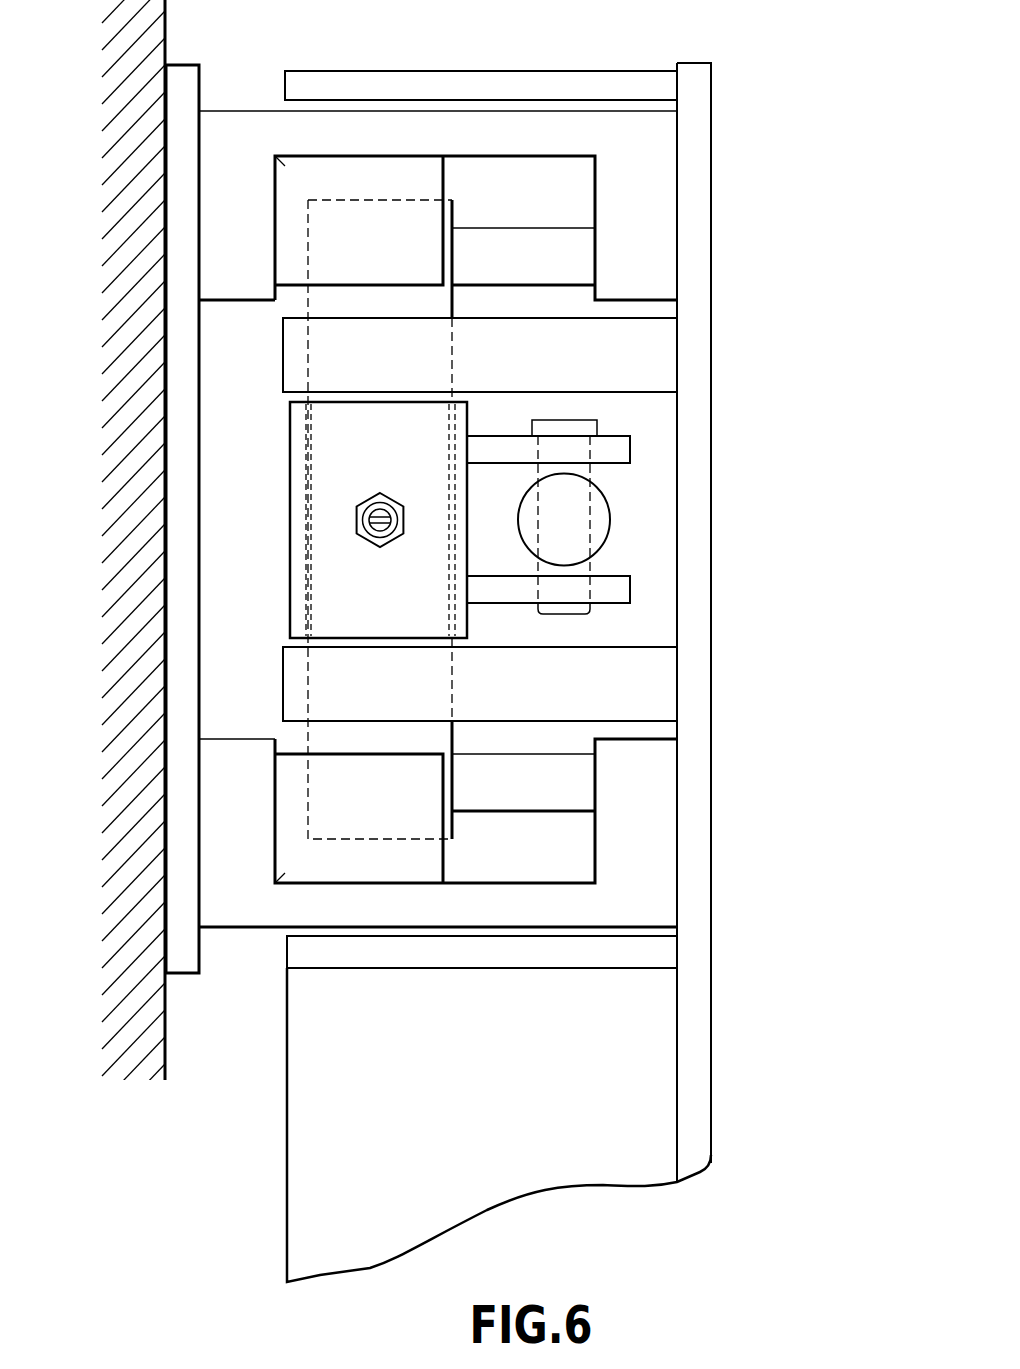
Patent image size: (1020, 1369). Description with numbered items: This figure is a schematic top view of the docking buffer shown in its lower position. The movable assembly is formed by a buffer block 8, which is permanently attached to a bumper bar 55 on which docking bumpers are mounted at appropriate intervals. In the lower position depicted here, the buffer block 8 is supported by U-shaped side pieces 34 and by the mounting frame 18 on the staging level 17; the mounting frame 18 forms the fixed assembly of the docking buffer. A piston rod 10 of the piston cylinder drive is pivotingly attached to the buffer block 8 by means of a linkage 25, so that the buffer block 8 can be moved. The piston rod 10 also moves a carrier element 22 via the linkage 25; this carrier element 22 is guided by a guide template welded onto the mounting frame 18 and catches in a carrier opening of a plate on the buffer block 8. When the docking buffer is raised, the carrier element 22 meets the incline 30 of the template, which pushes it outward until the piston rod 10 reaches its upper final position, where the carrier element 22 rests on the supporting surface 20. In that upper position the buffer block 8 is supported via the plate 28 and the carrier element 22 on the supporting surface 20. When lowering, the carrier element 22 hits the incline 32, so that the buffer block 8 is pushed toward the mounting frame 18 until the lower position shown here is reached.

The buffer block 8 is at (692, 82).
The piston rod 10 is at (608, 540).
The staging level 17 is at (170, 903).
The mounting frame 18 is at (188, 963).
The supporting surface 20 is at (453, 212).
The carrier element 22 is at (380, 735).
The linkage 25 is at (618, 447).
The plate 28 is at (617, 356).
The incline 30 is at (332, 173).
The incline 32 is at (547, 251).
The U-shaped side pieces 34 is at (242, 898).
The bumper bar 55 is at (460, 1195).